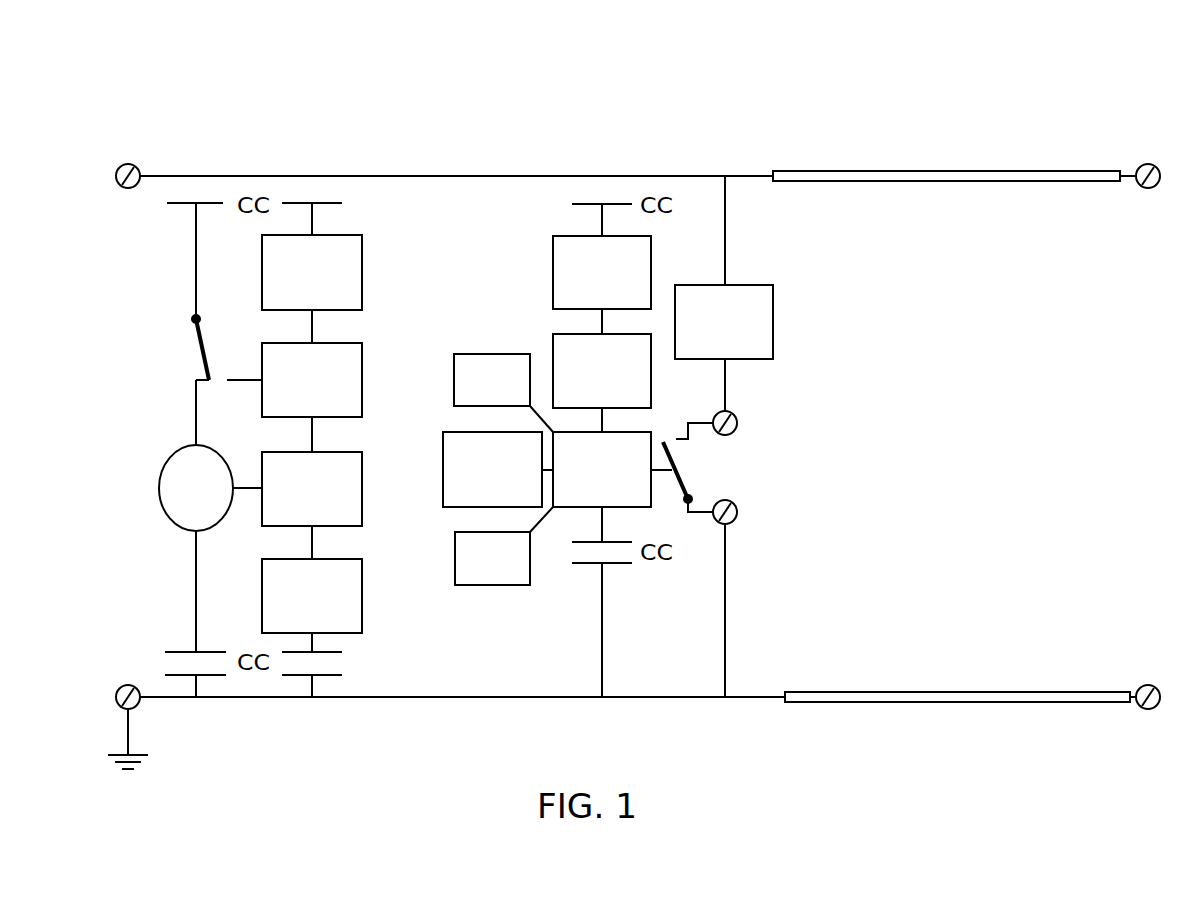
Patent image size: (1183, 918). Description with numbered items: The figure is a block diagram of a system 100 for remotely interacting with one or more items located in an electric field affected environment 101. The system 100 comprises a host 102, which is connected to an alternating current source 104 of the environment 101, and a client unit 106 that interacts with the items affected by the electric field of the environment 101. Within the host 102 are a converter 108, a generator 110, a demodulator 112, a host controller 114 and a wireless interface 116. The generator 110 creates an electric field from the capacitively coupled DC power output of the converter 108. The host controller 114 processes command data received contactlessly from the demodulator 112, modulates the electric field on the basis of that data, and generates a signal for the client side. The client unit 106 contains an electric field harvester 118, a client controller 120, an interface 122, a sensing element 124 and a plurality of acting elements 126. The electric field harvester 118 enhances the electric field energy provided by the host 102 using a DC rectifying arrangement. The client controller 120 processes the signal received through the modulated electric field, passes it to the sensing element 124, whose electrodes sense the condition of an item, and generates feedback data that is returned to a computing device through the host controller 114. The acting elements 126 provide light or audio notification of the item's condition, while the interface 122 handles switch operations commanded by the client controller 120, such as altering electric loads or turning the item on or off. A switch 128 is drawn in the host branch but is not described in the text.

The system 100 is at (889, 74).
The electric field affected environment 101 is at (773, 322).
The host 102 is at (241, 108).
The alternating current source 104 is at (90, 153).
The client unit 106 is at (612, 108).
The converter 108 is at (362, 280).
The generator 110 is at (160, 484).
The demodulator 112 is at (362, 386).
The host controller 114 is at (362, 488).
The wireless interface 116 is at (362, 598).
The electric field harvester 118 is at (553, 276).
The client controller 120 is at (651, 371).
The interface 122 is at (640, 507).
The sensing element 124 is at (443, 470).
The acting elements 126 is at (497, 354).
The host power switch 128 is at (200, 318).